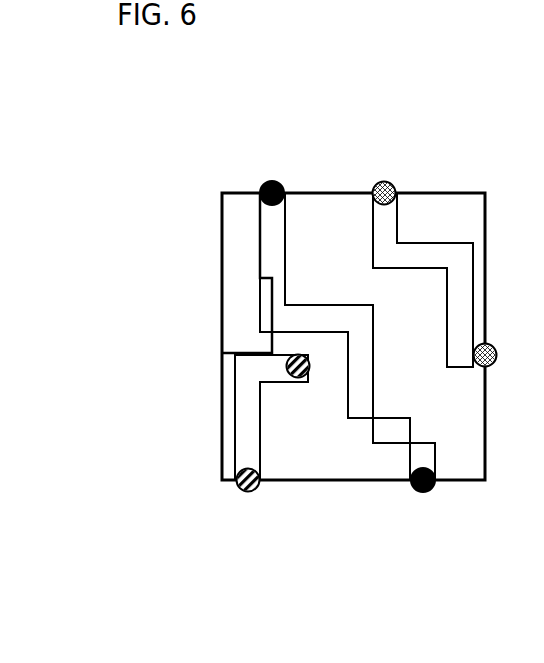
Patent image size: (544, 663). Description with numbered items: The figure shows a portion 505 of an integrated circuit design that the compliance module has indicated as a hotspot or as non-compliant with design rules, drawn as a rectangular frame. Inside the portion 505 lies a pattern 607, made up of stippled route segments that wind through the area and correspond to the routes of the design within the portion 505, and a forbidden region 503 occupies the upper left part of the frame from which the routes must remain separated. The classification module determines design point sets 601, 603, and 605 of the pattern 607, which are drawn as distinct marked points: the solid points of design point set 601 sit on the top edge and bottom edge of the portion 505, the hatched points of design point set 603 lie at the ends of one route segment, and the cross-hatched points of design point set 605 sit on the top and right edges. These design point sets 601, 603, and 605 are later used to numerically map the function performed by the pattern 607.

The portion 505 is at (191, 78).
The forbidden region 503 is at (222, 303).
The design point set 601 is at (283, 182).
The design point set 603 is at (300, 378).
The design point set 605 is at (396, 183).
The pattern 607 is at (445, 291).